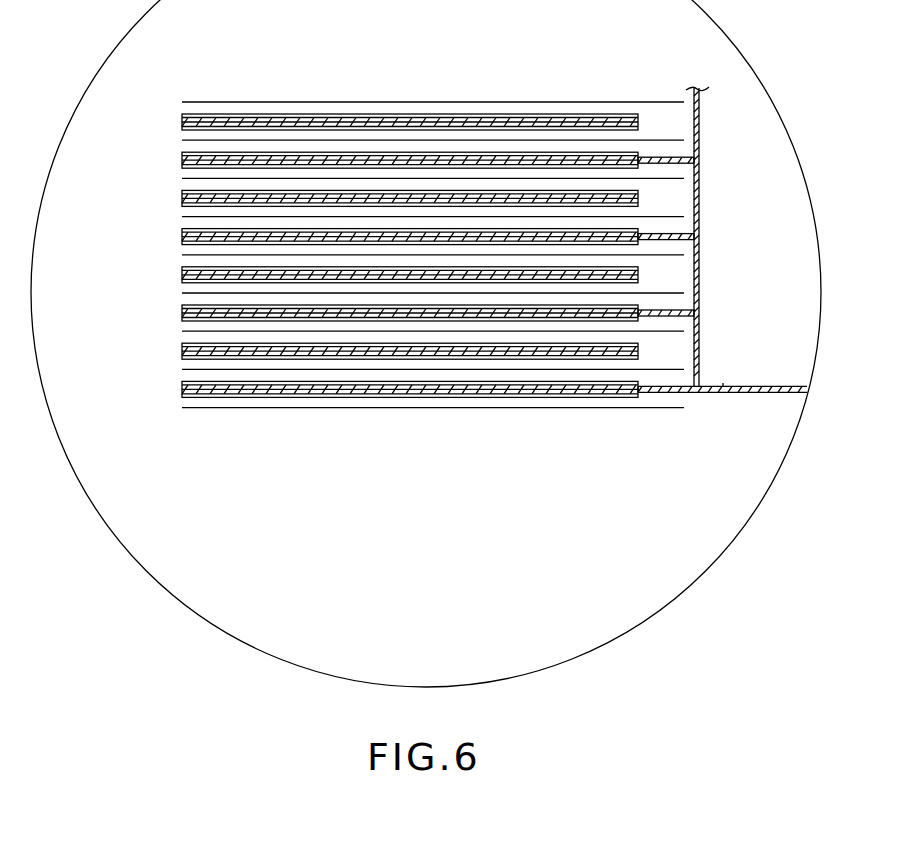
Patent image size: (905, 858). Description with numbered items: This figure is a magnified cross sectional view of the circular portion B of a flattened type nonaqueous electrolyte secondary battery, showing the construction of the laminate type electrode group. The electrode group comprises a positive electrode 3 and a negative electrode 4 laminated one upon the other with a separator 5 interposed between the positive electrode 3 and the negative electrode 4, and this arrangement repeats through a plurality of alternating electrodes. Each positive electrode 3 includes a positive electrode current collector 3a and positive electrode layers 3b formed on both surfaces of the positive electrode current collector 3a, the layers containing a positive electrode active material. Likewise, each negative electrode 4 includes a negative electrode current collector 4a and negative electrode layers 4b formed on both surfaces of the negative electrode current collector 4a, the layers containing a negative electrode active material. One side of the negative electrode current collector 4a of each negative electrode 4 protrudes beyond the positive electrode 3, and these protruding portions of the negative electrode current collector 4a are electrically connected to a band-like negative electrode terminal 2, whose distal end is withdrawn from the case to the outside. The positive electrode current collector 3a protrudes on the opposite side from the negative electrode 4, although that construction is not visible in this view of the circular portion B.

The negative electrode terminal 2 is at (762, 386).
The positive electrode 3 is at (166, 122).
The positive electrode current collector 3a is at (181, 351).
The positive electrode layers 3b is at (181, 345).
The negative electrode 4 is at (166, 160).
The negative electrode current collector 4a is at (668, 158).
The negative electrode layers 4b is at (181, 382).
The separator 5 is at (500, 101).
The circular portion B is at (692, 584).